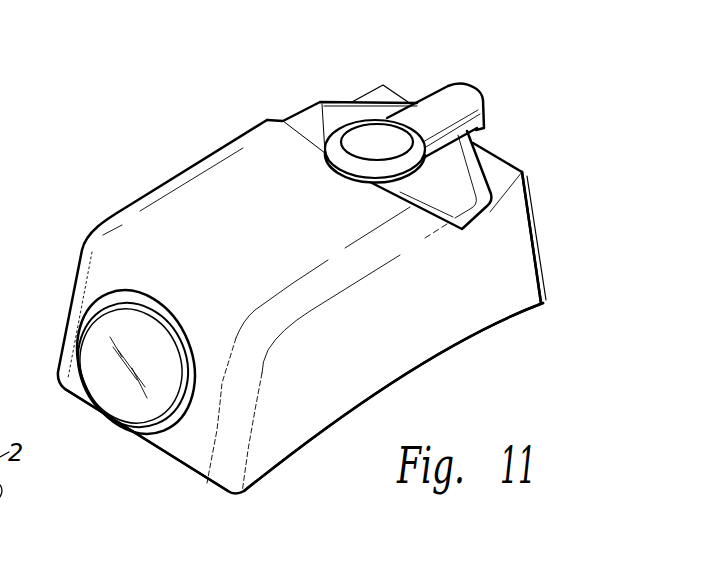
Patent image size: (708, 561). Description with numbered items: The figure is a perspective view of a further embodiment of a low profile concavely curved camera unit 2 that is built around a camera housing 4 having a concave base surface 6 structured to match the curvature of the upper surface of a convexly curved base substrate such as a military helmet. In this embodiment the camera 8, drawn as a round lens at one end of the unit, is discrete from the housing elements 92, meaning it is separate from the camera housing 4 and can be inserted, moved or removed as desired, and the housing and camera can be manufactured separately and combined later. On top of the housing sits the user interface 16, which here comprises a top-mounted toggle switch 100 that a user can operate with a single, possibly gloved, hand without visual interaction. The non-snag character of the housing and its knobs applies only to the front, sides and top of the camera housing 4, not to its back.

The low profile concavely curved camera unit 2 is at (187, 150).
The camera housing 4 is at (538, 240).
The concave base surface 6 is at (396, 381).
The camera 8 is at (103, 345).
The user interface 16 is at (430, 86).
The housing elements 92 is at (473, 290).
The top-mounted toggle switch 100 is at (467, 90).